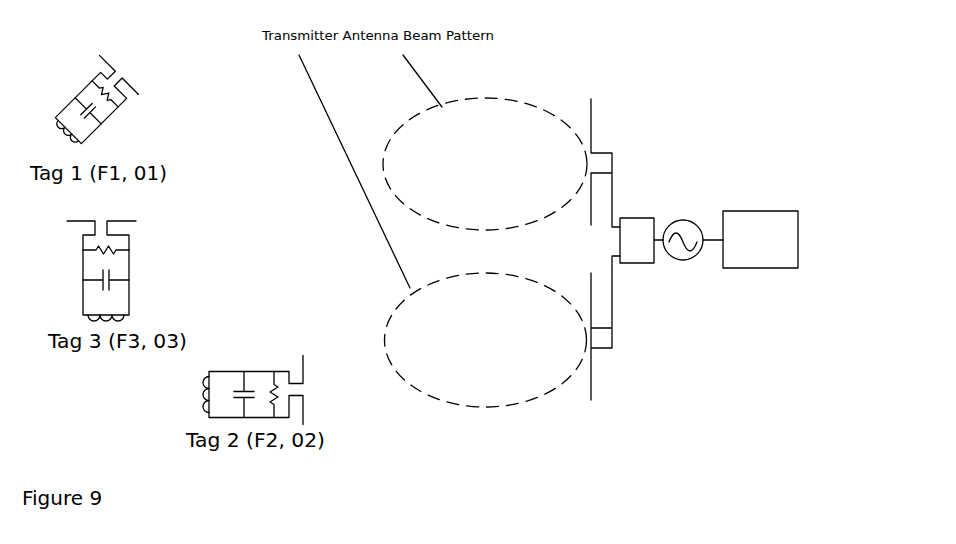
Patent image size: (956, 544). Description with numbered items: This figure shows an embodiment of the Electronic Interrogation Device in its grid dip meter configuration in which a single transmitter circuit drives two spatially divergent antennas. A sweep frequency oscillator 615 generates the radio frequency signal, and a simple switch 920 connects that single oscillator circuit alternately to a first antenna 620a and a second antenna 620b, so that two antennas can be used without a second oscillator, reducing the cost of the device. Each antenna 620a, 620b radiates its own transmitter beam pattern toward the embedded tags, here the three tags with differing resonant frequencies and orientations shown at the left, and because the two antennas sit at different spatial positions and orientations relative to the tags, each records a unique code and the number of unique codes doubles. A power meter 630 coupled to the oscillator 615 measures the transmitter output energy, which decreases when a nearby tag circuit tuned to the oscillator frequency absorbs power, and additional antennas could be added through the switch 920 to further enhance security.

The antenna 620a is at (599, 101).
The antenna 620b is at (593, 385).
The oscillator 615 is at (690, 203).
The switch 920 is at (645, 268).
The power meter 630 is at (764, 275).